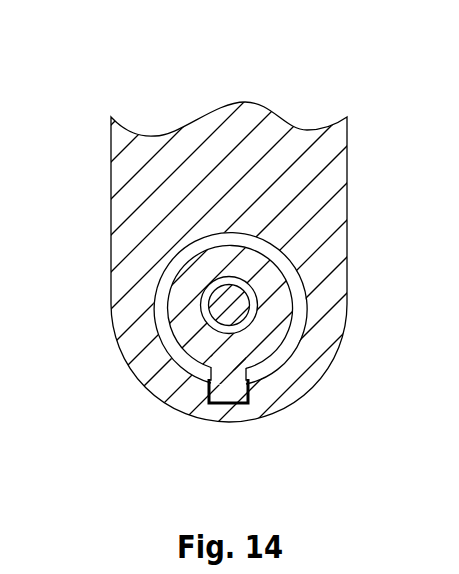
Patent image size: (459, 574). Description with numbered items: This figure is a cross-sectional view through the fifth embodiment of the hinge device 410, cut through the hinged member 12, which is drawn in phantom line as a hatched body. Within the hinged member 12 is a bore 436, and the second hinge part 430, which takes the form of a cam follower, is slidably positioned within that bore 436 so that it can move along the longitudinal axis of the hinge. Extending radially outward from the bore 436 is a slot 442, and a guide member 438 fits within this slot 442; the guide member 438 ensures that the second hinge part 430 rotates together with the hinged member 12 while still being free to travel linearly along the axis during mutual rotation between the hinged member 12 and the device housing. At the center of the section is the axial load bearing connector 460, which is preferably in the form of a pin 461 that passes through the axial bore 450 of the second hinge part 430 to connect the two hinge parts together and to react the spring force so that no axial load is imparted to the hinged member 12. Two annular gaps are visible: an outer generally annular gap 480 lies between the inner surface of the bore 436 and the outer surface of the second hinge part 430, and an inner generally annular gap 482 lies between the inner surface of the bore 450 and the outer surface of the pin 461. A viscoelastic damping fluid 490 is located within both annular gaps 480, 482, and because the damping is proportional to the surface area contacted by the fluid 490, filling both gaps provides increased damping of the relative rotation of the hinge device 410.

The hinge device 410 is at (140, 102).
The hinged member 12 is at (348, 168).
The pin 461 is at (157, 357).
The outer annular gap 480 is at (182, 249).
The bore 436 is at (183, 268).
The second hinge part 430 is at (177, 298).
The axial load bearing connector 460 is at (263, 302).
The axial bore 450 is at (258, 301).
The viscoelastic damping fluid 490 is at (231, 278).
The inner annular gap 482 is at (266, 310).
The guide member 438 is at (204, 401).
The slot 442 is at (237, 403).